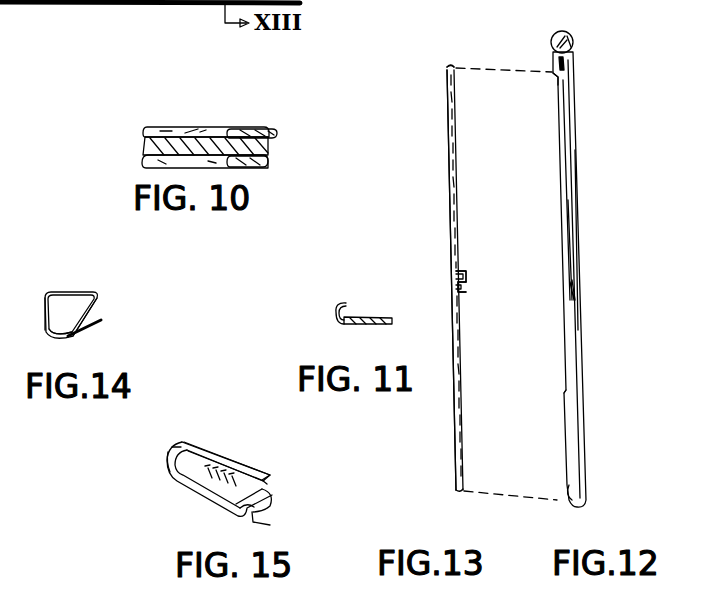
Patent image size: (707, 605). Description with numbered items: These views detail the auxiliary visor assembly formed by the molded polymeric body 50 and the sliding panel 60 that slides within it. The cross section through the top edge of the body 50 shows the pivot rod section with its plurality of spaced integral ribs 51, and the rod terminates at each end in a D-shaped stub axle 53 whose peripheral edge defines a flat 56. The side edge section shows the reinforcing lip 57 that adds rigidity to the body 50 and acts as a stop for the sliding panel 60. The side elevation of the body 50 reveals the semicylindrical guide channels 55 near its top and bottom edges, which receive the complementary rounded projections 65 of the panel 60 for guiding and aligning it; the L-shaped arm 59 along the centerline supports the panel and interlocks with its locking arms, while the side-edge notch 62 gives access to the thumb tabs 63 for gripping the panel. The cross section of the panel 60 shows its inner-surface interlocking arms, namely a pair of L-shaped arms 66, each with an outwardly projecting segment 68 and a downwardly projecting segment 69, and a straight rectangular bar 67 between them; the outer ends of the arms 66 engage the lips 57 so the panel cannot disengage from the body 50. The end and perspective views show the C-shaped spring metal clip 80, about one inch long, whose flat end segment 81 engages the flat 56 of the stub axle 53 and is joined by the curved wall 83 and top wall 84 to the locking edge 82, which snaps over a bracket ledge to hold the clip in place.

In FIG. 10, the body 50 is at (214, 122).
In FIG. 11, the body 50 is at (389, 316).
In FIG. 12, the body 50 is at (584, 199).
In FIG. 10, the ribs 51 is at (269, 150).
In FIG. 12, the stub axles 53 is at (570, 43).
In FIG. 12, the guide channels 55 is at (553, 76).
In FIG. 12, the flat 56 is at (551, 37).
In FIG. 11, the reinforcing lip 57 is at (341, 302).
In FIG. 12, the reinforcing lip 57 is at (563, 218).
In FIG. 12, the L-shaped arm 59 is at (583, 292).
In FIG. 13, the sliding panel 60 is at (439, 213).
In FIG. 12, the notch 62 is at (577, 373).
In FIG. 13, the thumb tabs 63 is at (458, 349).
In FIG. 13, the projections 65 is at (453, 70).
In FIG. 13, the L-shaped arms 66 is at (460, 261).
In FIG. 13, the rectangular bar 67 is at (463, 293).
In FIG. 13, the outwardly projecting segment 68 is at (473, 264).
In FIG. 13, the downwardly projecting segment 69 is at (467, 279).
In FIG. 14, the spring clip 80 is at (57, 293).
In FIG. 15, the spring clip 80 is at (256, 456).
In FIG. 14, the flat end segment 81 is at (98, 327).
In FIG. 15, the flat end segment 81 is at (206, 440).
In FIG. 14, the locking edge 82 is at (92, 302).
In FIG. 15, the locking edge 82 is at (268, 493).
In FIG. 14, the curved wall 83 is at (45, 309).
In FIG. 15, the curved wall 83 is at (168, 448).
In FIG. 14, the top wall 84 is at (93, 293).
In FIG. 15, the top wall 84 is at (274, 509).